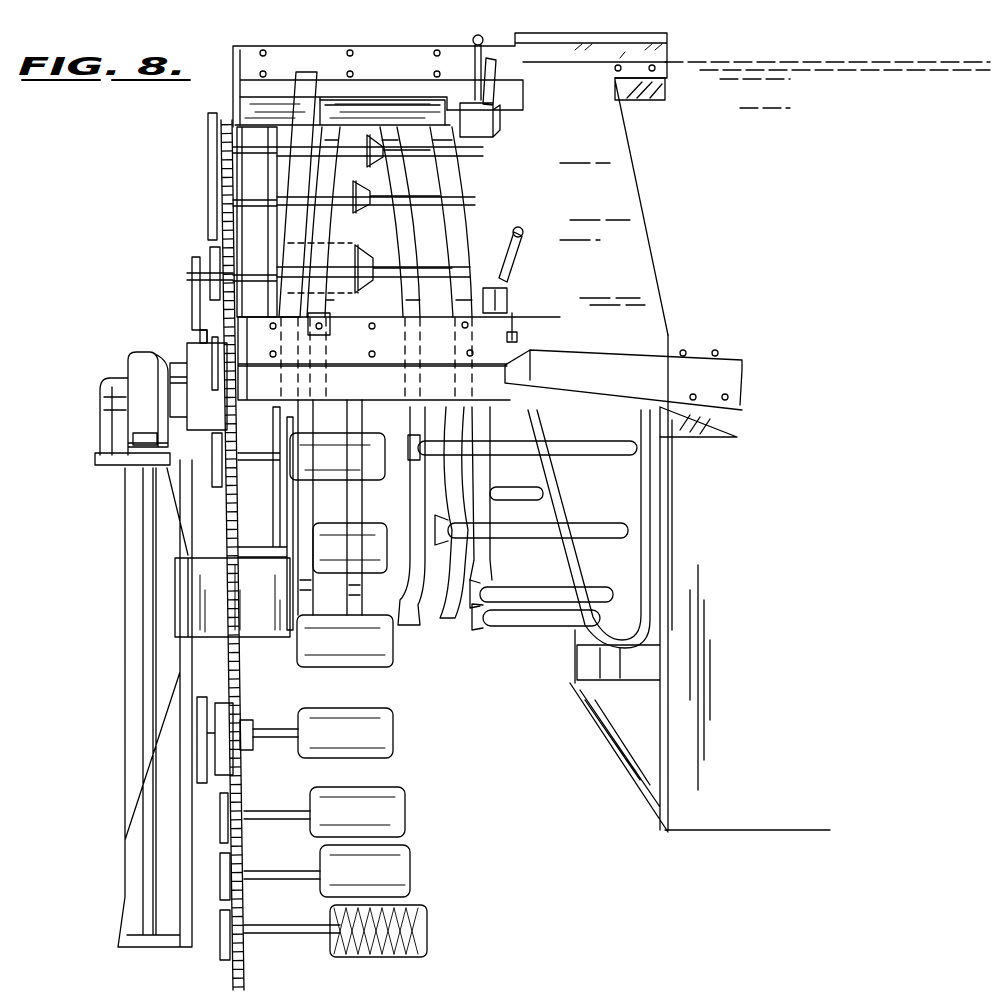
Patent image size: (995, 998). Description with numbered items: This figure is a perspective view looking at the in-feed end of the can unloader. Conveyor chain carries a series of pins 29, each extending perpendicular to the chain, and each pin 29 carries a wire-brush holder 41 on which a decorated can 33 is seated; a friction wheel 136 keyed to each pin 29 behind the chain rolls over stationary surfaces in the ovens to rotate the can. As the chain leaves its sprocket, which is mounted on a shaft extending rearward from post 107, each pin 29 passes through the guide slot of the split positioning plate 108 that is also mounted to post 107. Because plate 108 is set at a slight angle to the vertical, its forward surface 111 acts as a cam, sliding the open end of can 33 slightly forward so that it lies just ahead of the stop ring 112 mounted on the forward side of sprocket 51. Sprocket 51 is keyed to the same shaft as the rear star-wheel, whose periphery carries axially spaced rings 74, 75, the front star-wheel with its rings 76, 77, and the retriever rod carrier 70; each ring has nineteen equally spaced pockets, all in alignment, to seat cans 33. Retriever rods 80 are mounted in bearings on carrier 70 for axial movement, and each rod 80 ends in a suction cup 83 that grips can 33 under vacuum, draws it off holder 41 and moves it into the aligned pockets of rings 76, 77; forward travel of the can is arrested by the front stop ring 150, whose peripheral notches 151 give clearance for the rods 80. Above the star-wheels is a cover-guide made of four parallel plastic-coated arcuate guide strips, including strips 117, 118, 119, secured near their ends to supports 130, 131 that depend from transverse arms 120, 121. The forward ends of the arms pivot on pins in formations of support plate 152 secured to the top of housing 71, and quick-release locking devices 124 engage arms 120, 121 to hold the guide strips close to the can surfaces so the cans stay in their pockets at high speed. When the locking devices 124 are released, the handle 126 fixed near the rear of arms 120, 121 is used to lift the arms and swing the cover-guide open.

The transverse arm 120 is at (367, 58).
The handle 126 is at (307, 83).
The support 130 is at (410, 108).
The quick-release locking device 124 is at (483, 75).
The arcuate guide strip 117 is at (333, 143).
The arcuate guide strip 118 is at (428, 300).
The arcuate guide strip 119 is at (463, 227).
The support plate 152 is at (635, 183).
The housing 71 is at (775, 446).
The transverse arm 121 is at (540, 330).
The support 131 is at (405, 383).
The sprocket 51 is at (217, 230).
The stop ring 112 is at (275, 497).
The forward surface 111 is at (300, 500).
The ring 74 is at (312, 593).
The ring 75 is at (360, 593).
The split positioning plate 108 is at (293, 655).
The post 107 is at (153, 877).
The can 33 is at (417, 858).
The friction wheel 136 is at (220, 947).
The pin 29 is at (275, 937).
The holder 41 is at (350, 937).
The retriever rod carrier 70 is at (621, 583).
The retriever rod 80 is at (528, 627).
The front stop ring 150 is at (508, 415).
The peripheral notch 151 is at (490, 458).
The suction cup 83 is at (490, 630).
The ring 76 is at (408, 640).
The ring 77 is at (430, 628).